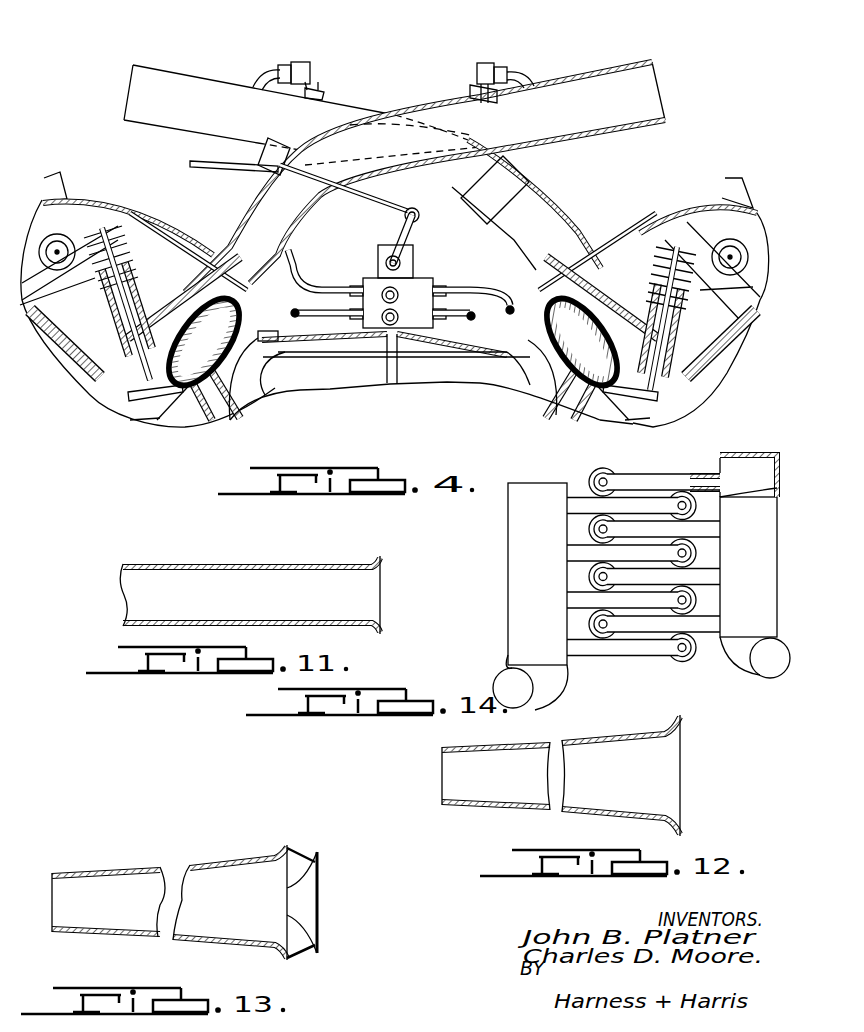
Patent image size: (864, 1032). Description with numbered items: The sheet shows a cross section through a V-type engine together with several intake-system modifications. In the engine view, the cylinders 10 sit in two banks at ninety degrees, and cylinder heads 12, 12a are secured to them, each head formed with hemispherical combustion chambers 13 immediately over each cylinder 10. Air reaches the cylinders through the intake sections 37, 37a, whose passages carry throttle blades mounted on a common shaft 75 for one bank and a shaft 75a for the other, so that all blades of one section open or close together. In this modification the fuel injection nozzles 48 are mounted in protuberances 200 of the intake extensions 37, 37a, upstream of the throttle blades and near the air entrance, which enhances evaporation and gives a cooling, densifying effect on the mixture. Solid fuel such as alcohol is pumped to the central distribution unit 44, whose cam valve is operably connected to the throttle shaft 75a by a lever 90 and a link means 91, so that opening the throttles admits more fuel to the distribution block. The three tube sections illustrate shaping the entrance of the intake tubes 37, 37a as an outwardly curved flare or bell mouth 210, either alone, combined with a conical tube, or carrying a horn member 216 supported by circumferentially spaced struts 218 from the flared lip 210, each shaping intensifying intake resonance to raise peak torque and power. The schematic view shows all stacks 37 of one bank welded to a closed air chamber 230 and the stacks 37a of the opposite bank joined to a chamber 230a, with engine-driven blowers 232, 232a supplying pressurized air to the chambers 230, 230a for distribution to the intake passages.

In FIG. 4, the cylinders 10 is at (200, 418).
In FIG. 4, the cylinder head 12 is at (632, 224).
In FIG. 4, the cylinder head 12a is at (163, 222).
In FIG. 4, the hemispherical combustion chambers 13 is at (137, 420).
In FIG. 4, the intake section 37 is at (176, 74).
In FIG. 14, the intake section 37 is at (578, 600).
In FIG. 4, the intake section 37a is at (597, 72).
In FIG. 14, the intake section 37a is at (633, 527).
In FIG. 4, the central distribution unit 44 is at (364, 268).
In FIG. 4, the fuel injection nozzles 48 is at (313, 63).
In FIG. 4, the shaft 75 is at (513, 198).
In FIG. 4, the shaft 75a is at (312, 228).
In FIG. 4, the lever 90 is at (422, 252).
In FIG. 4, the link means 91 is at (407, 209).
In FIG. 4, the protuberances 200 is at (317, 90).
In FIG. 11, the flared lip 210 is at (378, 558).
In FIG. 12, the flared lip 210 is at (678, 718).
In FIG. 13, the flared lip 210 is at (283, 846).
In FIG. 13, the horn member 216 is at (320, 860).
In FIG. 13, the struts 218 is at (300, 855).
In FIG. 14, the closed air chamber 230 is at (528, 521).
In FIG. 14, the closed air chamber 230a is at (745, 452).
In FIG. 14, the blower 232 is at (510, 675).
In FIG. 14, the blower 232a is at (782, 670).